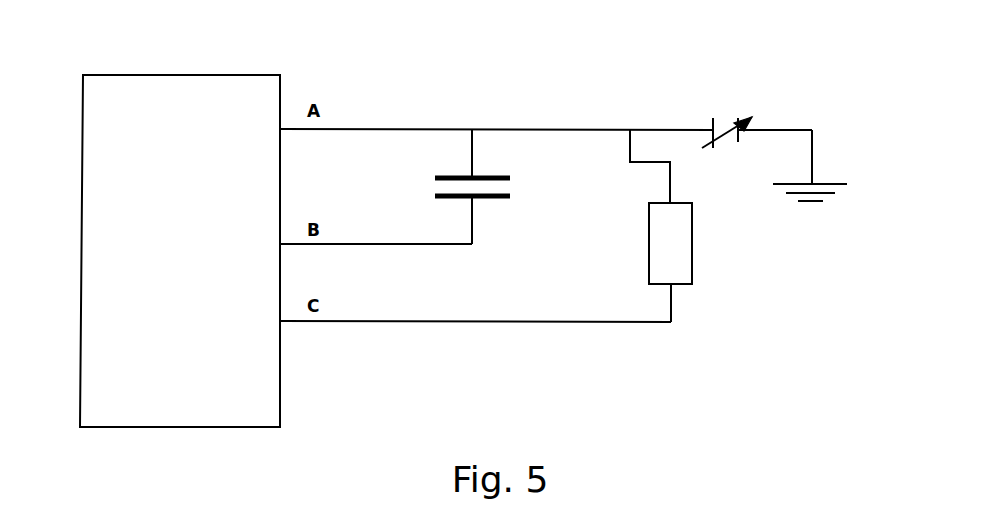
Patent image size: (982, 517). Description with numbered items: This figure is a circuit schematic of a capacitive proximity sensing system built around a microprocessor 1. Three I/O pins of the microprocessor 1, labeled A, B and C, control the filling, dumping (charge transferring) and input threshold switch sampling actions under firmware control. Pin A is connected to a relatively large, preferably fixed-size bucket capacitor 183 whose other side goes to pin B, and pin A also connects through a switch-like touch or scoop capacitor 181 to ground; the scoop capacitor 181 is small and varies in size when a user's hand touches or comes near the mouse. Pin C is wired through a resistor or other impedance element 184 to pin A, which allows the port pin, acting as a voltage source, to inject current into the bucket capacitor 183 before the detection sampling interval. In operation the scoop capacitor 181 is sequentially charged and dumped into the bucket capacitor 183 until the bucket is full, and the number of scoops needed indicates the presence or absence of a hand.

The microprocessor 1 is at (166, 229).
The scoop capacitor 181 is at (725, 86).
The bucket capacitor 183 is at (497, 172).
The impedance element 184 is at (683, 250).